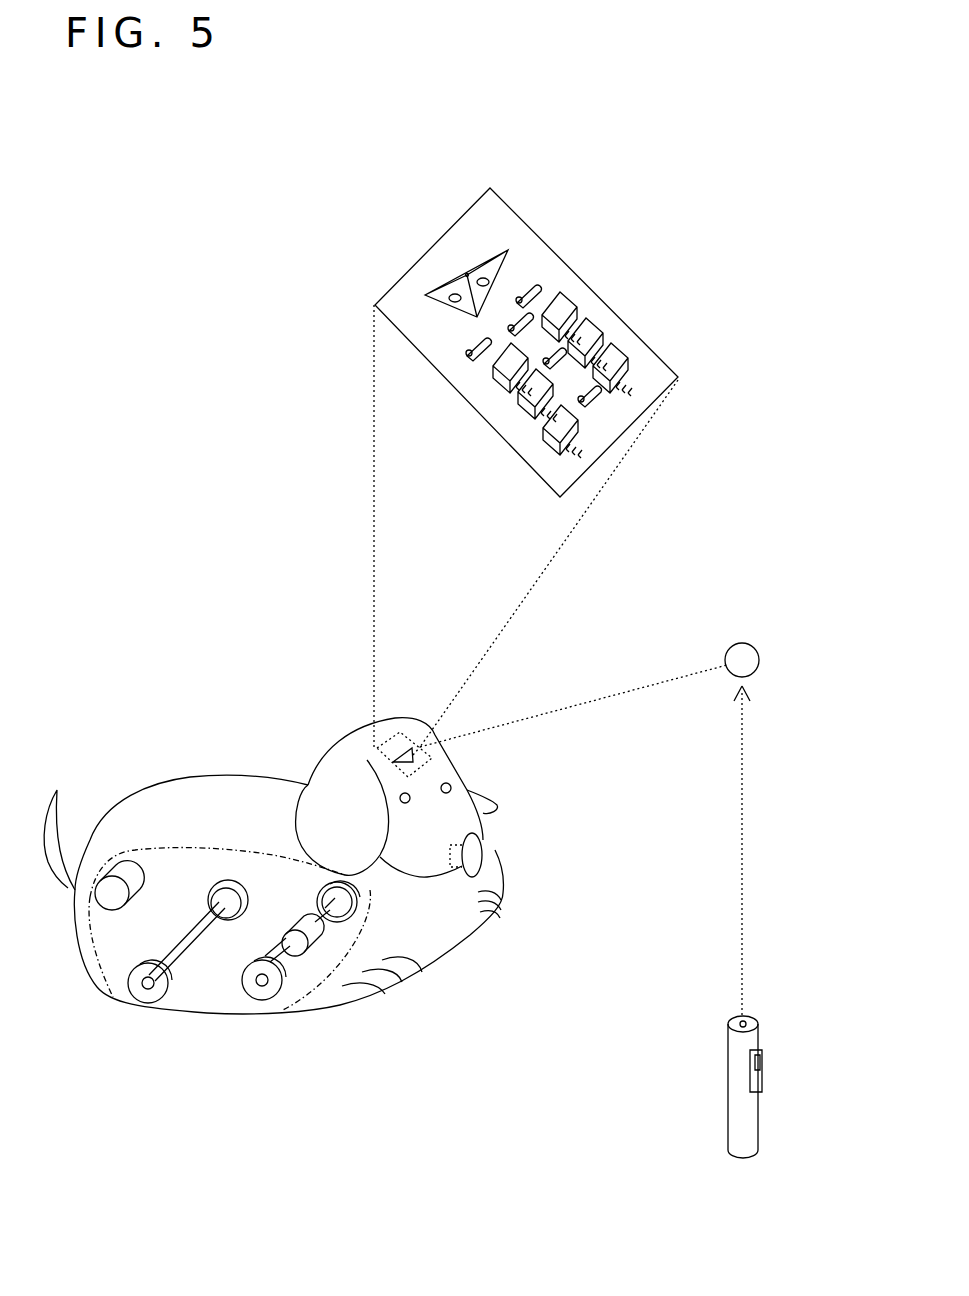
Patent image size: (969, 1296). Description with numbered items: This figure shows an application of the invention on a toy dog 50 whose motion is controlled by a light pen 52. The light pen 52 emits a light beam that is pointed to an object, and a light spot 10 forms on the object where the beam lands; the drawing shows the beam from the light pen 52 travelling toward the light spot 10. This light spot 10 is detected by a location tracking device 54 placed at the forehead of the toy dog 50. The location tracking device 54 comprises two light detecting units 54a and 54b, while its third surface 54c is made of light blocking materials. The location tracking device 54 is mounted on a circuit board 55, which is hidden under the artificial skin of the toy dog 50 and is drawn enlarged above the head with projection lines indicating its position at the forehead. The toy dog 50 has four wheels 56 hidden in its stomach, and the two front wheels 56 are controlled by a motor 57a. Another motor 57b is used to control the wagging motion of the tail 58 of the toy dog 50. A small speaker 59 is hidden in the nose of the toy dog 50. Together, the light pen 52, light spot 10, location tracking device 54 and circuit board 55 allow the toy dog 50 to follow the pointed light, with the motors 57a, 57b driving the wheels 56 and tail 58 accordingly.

The light spot 10 is at (748, 653).
The toy dog 50 is at (210, 808).
The light pen 52 is at (728, 1058).
The location tracking device 54 is at (455, 303).
The light detecting unit 54a is at (449, 298).
The light detecting unit 54b is at (490, 282).
The third surface 54c is at (467, 274).
The circuit board 55 is at (535, 455).
The wheels 56 is at (213, 927).
The motor 57a is at (318, 930).
The motor 57b is at (112, 897).
The tail 58 is at (60, 820).
The speaker 59 is at (483, 845).